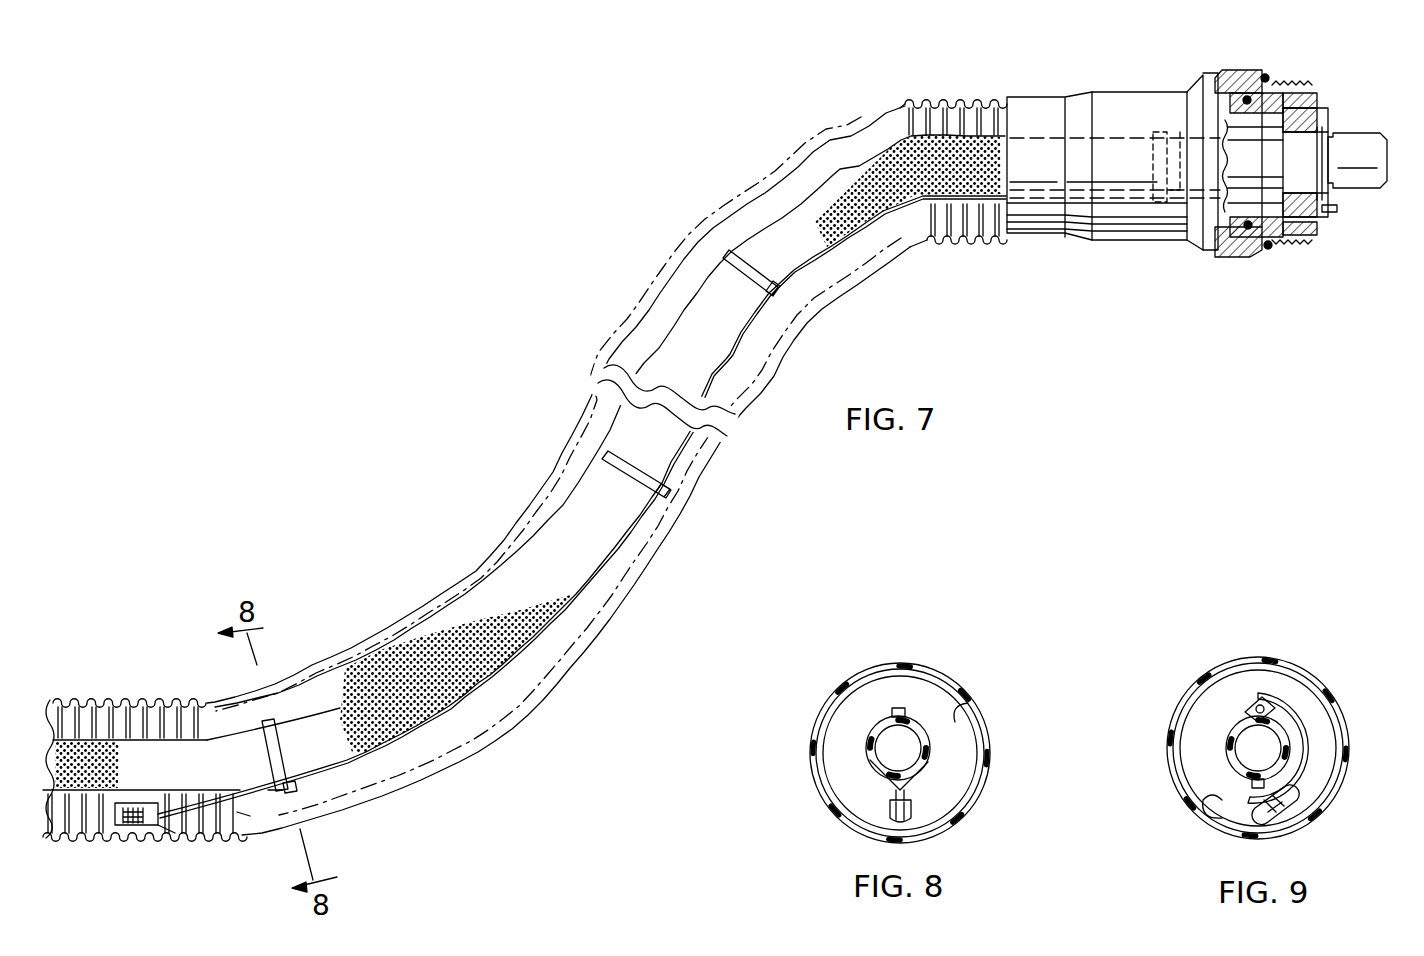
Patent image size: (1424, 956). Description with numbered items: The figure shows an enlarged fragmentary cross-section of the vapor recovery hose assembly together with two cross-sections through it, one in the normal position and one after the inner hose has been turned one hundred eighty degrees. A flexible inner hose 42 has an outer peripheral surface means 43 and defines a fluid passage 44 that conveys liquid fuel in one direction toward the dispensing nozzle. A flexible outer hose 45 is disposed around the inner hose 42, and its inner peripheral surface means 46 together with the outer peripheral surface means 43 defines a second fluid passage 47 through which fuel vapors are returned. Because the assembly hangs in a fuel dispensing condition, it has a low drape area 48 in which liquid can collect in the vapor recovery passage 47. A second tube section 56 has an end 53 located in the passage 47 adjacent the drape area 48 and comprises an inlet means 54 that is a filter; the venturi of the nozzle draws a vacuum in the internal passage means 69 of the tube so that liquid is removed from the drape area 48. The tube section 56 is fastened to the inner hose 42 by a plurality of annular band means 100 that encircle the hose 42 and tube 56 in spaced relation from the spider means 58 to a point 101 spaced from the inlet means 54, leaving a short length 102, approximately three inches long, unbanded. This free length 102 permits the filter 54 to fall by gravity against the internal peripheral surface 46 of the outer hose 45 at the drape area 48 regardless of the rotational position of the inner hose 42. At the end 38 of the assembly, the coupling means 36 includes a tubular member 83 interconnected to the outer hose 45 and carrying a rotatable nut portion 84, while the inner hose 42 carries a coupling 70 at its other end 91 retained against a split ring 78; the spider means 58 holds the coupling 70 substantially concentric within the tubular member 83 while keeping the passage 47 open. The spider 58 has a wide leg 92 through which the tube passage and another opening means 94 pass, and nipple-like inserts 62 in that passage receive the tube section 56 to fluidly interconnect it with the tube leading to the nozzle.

In FIG. 7, the coupling means 36 is at (1124, 92).
In FIG. 7, the end 38 is at (960, 100).
In FIG. 7, the flexible inner hose 42 is at (788, 208).
In FIG. 8, the flexible inner hose 42 is at (870, 735).
In FIG. 9, the flexible inner hose 42 is at (1230, 730).
In FIG. 7, the outer peripheral surface means 43 is at (848, 168).
In FIG. 8, the outer peripheral surface means 43 is at (937, 757).
In FIG. 8, the fluid passage 44 is at (897, 750).
In FIG. 7, the flexible outer hose 45 is at (921, 103).
In FIG. 8, the flexible outer hose 45 is at (937, 672).
In FIG. 9, the flexible outer hose 45 is at (1330, 692).
In FIG. 7, the inner peripheral surface means 46 is at (1005, 112).
In FIG. 8, the inner peripheral surface means 46 is at (970, 707).
In FIG. 9, the inner peripheral surface means 46 is at (1210, 807).
In FIG. 7, the second fluid passage 47 is at (920, 221).
In FIG. 8, the second fluid passage 47 is at (871, 704).
In FIG. 7, the low drape area 48 is at (130, 838).
In FIG. 9, the low drape area 48 is at (1265, 836).
In FIG. 7, the end 53 is at (180, 829).
In FIG. 7, the inlet means 54 is at (155, 810).
In FIG. 8, the inlet means 54 is at (867, 830).
In FIG. 9, the inlet means 54 is at (1290, 807).
In FIG. 7, the second tube section 56 is at (680, 463).
In FIG. 8, the second tube section 56 is at (890, 783).
In FIG. 9, the second tube section 56 is at (1247, 708).
In FIG. 7, the spider means 58 is at (1303, 123).
In FIG. 7, the nipple-like inserts 62 is at (1336, 210).
In FIG. 8, the internal passage means 69 is at (912, 795).
In FIG. 7, the coupling 70 is at (1363, 175).
In FIG. 7, the split ring 78 is at (1328, 126).
In FIG. 7, the tubular member 83 is at (1275, 100).
In FIG. 7, the rotatable nut portion 84 is at (1238, 72).
In FIG. 7, the end 91 is at (1136, 137).
In FIG. 7, the leg 92 is at (1296, 212).
In FIG. 7, the opening means 94 is at (1303, 217).
In FIG. 7, the annular band means 100 is at (726, 250).
In FIG. 8, the annular band means 100 is at (903, 780).
In FIG. 9, the annular band means 100 is at (1223, 743).
In FIG. 7, the point 101 is at (270, 792).
In FIG. 7, the short length 102 is at (240, 815).
In FIG. 8, the short length 102 is at (910, 823).
In FIG. 9, the short length 102 is at (1320, 755).